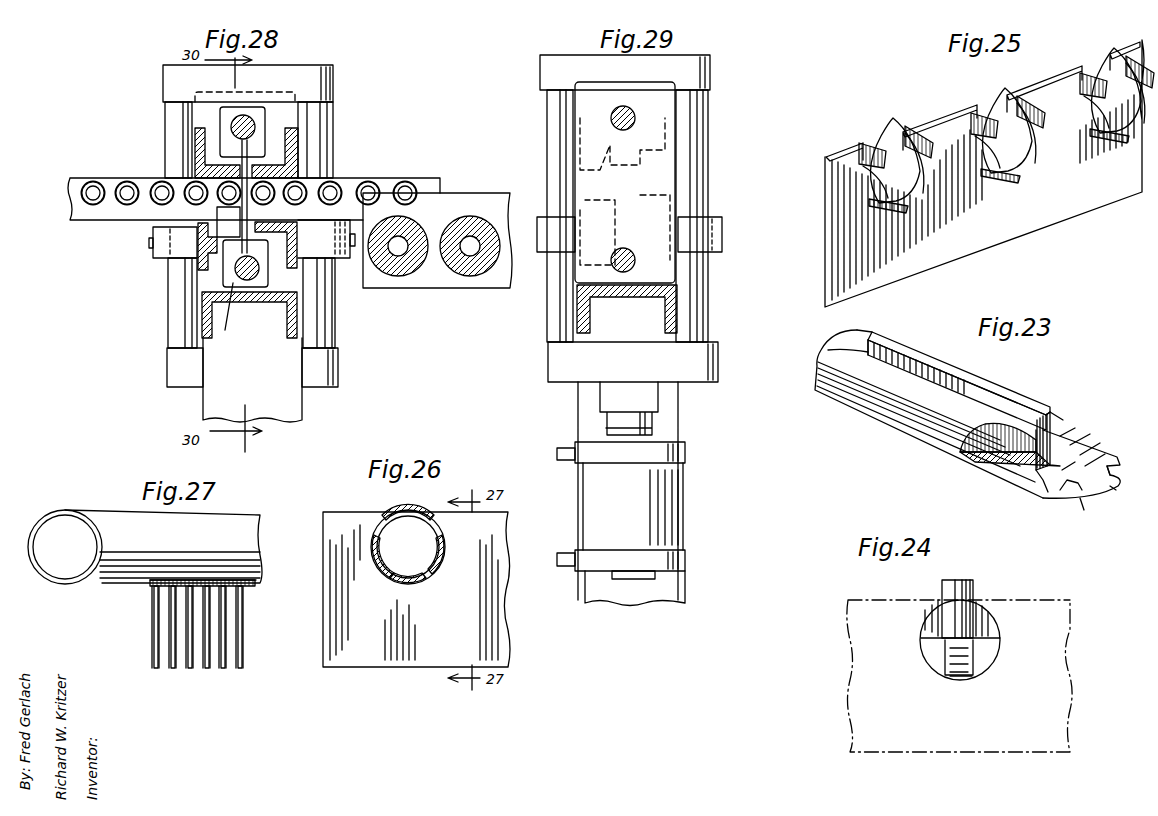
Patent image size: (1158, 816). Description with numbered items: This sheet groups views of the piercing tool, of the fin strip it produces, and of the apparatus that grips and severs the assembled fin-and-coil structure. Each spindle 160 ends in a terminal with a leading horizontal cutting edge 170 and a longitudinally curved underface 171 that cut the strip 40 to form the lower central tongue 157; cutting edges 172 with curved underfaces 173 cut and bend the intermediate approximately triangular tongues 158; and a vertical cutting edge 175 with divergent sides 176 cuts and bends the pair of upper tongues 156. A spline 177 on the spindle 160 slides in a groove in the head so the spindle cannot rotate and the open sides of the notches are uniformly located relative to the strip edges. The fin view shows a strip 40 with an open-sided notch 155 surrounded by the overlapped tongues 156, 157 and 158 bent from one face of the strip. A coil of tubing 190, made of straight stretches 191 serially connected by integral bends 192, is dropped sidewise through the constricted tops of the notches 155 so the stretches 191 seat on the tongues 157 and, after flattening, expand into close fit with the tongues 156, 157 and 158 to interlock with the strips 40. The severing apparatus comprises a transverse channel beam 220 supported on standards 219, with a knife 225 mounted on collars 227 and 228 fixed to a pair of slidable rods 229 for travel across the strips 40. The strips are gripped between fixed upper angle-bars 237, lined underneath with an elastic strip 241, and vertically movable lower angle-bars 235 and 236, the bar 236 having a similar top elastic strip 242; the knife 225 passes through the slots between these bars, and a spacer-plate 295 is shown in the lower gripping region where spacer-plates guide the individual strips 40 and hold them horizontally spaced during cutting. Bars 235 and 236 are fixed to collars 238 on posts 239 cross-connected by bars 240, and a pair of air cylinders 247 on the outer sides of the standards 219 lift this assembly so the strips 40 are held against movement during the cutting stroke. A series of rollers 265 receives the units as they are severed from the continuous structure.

In FIG. 25, the strip 40 is at (845, 258).
In FIG. 24, the strip 40 is at (1085, 684).
In FIG. 27, the strip 40 is at (243, 628).
In FIG. 26, the strip 40 is at (498, 600).
In FIG. 25, the notch 155 is at (878, 202).
In FIG. 25, the upper tongue 156 is at (893, 122).
In FIG. 26, the upper tongue 156 is at (380, 518).
In FIG. 25, the lower central tongue 157 is at (900, 212).
In FIG. 27, the lower central tongue 157 is at (236, 594).
In FIG. 26, the lower central tongue 157 is at (412, 584).
In FIG. 25, the intermediate tongue 158 is at (862, 187).
In FIG. 26, the intermediate tongue 158 is at (380, 565).
In FIG. 23, the spindle 160 is at (831, 406).
In FIG. 23, the leading horizontal cutting edge 170 is at (1100, 492).
In FIG. 24, the leading horizontal cutting edge 170 is at (1012, 641).
In FIG. 23, the longitudinally curved underface 171 is at (1082, 510).
In FIG. 24, the longitudinally curved underface 171 is at (958, 676).
In FIG. 23, the cutting edge 172 is at (1110, 458).
In FIG. 24, the cutting edge 172 is at (920, 638).
In FIG. 23, the curved underface 173 is at (1040, 480).
In FIG. 24, the curved underface 173 is at (930, 658).
In FIG. 23, the vertical cutting edge 175 is at (1058, 428).
In FIG. 24, the vertical cutting edge 175 is at (962, 598).
In FIG. 23, the divergent side 176 is at (998, 437).
In FIG. 24, the divergent side 176 is at (940, 605).
In FIG. 23, the spline 177 is at (980, 380).
In FIG. 27, the coil of tubing 190 is at (243, 510).
In FIG. 28, the straight stretch 191 is at (100, 177).
In FIG. 27, the straight stretch 191 is at (262, 514).
In FIG. 26, the straight stretch 191 is at (426, 576).
In FIG. 27, the bend 192 is at (65, 534).
In FIG. 28, the standard 219 is at (252, 380).
In FIG. 29, the standard 219 is at (680, 413).
In FIG. 28, the transverse channel beam 220 is at (255, 300).
In FIG. 29, the transverse channel beam 220 is at (616, 299).
In FIG. 28, the knife 225 is at (220, 150).
In FIG. 28, the collar 227 is at (223, 317).
In FIG. 28, the collar 228 is at (241, 114).
In FIG. 28, the rod 229 is at (234, 127).
In FIG. 29, the rod 229 is at (630, 110).
In FIG. 28, the angle-bar 235 is at (200, 257).
In FIG. 28, the angle-bar 236 is at (300, 242).
In FIG. 28, the angle-bar 237 is at (299, 154).
In FIG. 29, the angle-bar 237 is at (700, 137).
In FIG. 28, the collar 238 is at (158, 257).
In FIG. 29, the collar 238 is at (738, 233).
In FIG. 28, the post 239 is at (332, 117).
In FIG. 29, the post 239 is at (700, 164).
In FIG. 28, the bar 240 is at (340, 361).
In FIG. 29, the bar 240 is at (629, 218).
In FIG. 28, the elastic strip 241 is at (270, 165).
In FIG. 28, the elastic strip 242 is at (298, 222).
In FIG. 29, the air cylinder 247 is at (621, 524).
In FIG. 28, the roller 265 is at (455, 270).
In FIG. 28, the stop block 295 is at (217, 208).